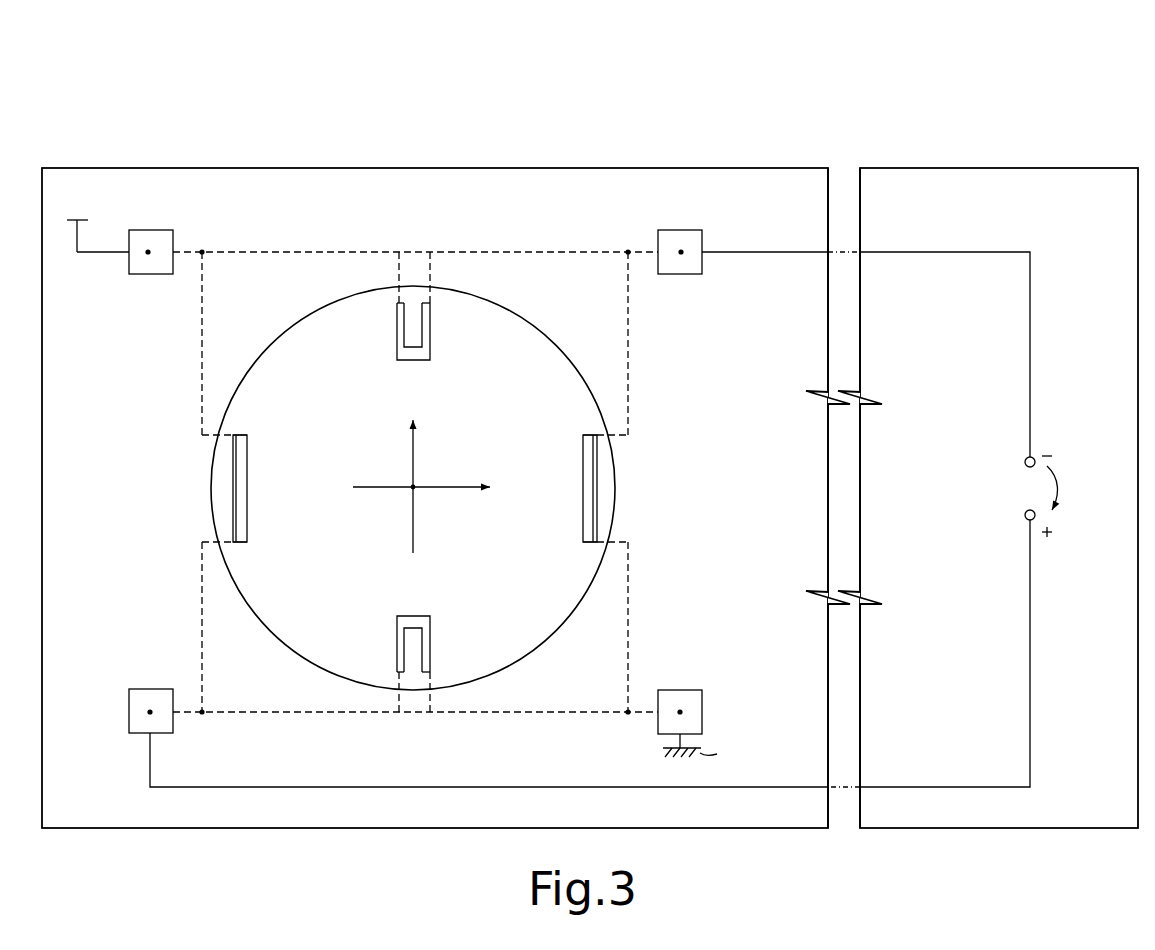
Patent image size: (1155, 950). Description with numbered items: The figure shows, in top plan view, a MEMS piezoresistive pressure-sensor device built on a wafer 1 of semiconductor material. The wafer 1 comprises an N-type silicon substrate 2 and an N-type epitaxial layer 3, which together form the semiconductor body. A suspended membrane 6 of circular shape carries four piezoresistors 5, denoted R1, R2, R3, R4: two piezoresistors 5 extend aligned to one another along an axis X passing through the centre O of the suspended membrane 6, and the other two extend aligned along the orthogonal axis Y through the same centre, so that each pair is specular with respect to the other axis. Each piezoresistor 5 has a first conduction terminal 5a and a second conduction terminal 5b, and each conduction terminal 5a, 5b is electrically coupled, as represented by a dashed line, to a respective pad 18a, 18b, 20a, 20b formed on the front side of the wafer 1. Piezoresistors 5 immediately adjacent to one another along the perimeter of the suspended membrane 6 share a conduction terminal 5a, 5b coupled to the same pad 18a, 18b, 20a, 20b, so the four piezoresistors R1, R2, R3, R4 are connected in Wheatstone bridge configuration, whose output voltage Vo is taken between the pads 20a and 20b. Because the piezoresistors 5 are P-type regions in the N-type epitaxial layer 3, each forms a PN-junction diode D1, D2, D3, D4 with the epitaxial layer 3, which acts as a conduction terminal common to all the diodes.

The wafer 1 is at (590, 456).
The silicon substrate 2 is at (700, 168).
The epitaxial layer 3 is at (999, 498).
The piezoresistor 5 is at (415, 487).
The piezoresistor R1 is at (363, 346).
The piezoresistor R2 is at (285, 501).
The piezoresistor R3 is at (543, 494).
The piezoresistor R4 is at (459, 633).
The diode D1 is at (403, 331).
The diode D2 is at (241, 508).
The diode D3 is at (589, 523).
The diode D4 is at (430, 650).
The first conduction terminal 5a is at (421, 298).
The second conduction terminal 5b is at (406, 298).
The suspended membrane 6 is at (529, 324).
The pad 18a is at (146, 273).
The pad 18b is at (687, 692).
The pad 20a is at (148, 698).
The pad 20b is at (688, 275).